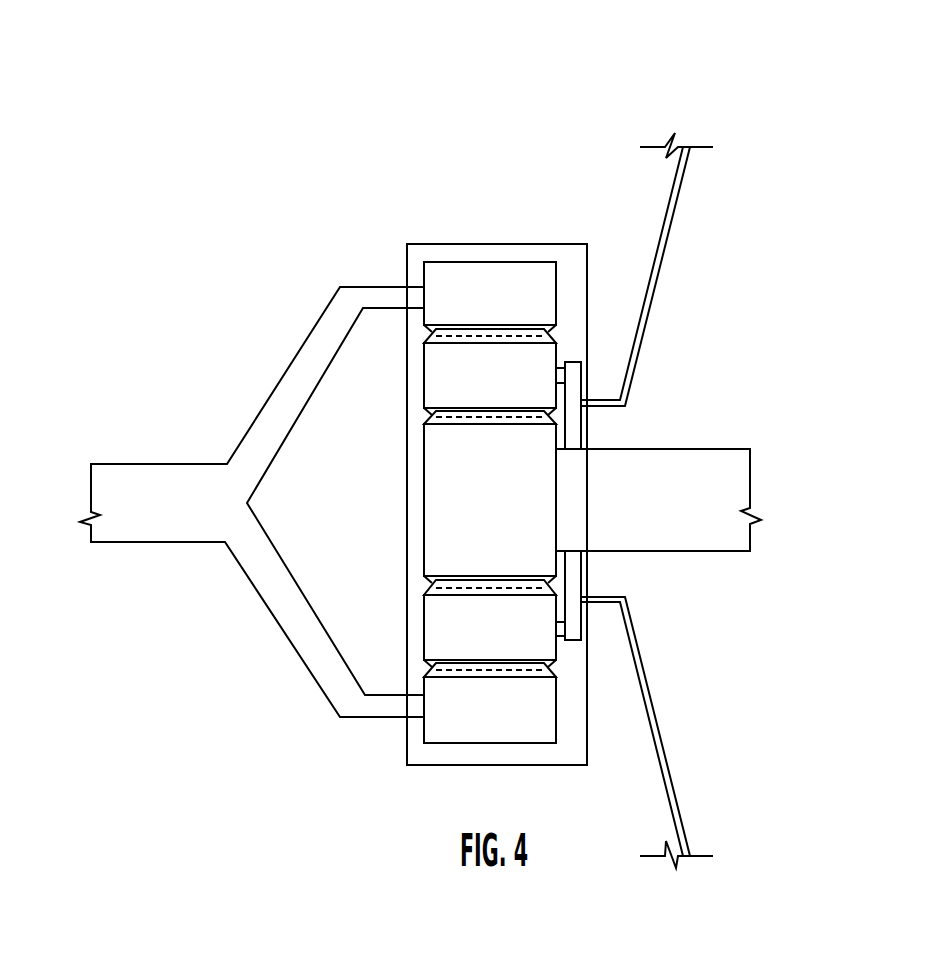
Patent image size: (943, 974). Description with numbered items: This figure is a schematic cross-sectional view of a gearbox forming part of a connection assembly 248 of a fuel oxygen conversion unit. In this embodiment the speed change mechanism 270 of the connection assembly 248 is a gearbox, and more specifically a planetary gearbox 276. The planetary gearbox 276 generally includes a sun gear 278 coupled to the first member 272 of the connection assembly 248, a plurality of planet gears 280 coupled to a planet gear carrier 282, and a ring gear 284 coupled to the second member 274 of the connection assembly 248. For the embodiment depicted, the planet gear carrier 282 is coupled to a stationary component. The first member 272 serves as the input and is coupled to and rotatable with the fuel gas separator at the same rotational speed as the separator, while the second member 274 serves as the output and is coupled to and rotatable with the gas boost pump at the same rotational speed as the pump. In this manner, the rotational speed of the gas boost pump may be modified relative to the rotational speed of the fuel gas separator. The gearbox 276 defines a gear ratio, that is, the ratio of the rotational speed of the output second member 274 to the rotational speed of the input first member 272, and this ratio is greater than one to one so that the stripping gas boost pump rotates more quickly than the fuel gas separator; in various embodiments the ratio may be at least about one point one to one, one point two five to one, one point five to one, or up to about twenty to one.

The connection assembly 248 is at (302, 104).
The speed change mechanism 270 is at (503, 208).
The first member 272 is at (702, 535).
The second member 274 is at (179, 533).
The planetary gearbox 276 is at (549, 244).
The sun gear 278 is at (507, 513).
The planet gears 280 is at (507, 398).
The planet gear carrier 282 is at (570, 427).
The ring gear 284 is at (507, 313).